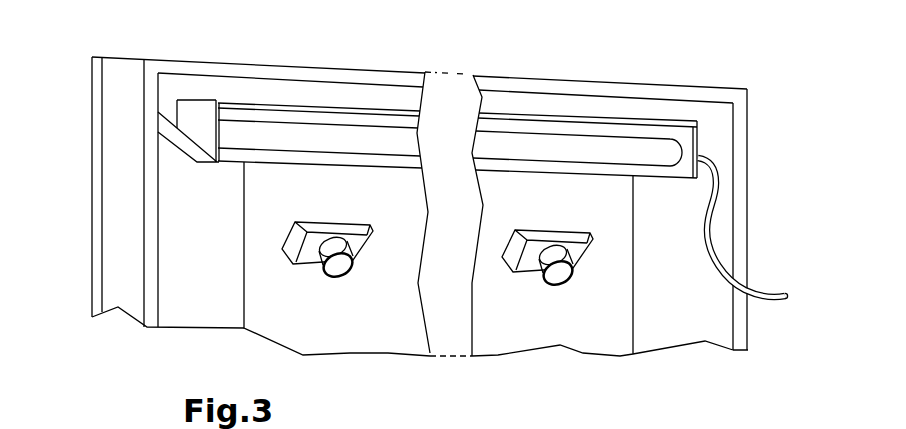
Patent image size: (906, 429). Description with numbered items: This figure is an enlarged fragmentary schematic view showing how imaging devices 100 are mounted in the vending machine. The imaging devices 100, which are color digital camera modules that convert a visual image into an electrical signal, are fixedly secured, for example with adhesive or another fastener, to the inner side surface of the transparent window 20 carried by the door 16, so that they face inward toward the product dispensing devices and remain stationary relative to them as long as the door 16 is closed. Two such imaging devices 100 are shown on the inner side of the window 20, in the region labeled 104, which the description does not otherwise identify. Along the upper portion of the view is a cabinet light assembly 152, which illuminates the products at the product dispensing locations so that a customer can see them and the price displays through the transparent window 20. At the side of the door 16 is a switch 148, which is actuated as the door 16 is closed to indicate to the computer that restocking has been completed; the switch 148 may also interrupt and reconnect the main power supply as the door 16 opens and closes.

The door 16 is at (93, 224).
The transparent window 20 is at (588, 356).
The imaging device 100 is at (337, 262).
The panel 104 is at (378, 323).
The switch 148 is at (716, 116).
The cabinet light assembly 152 is at (548, 145).